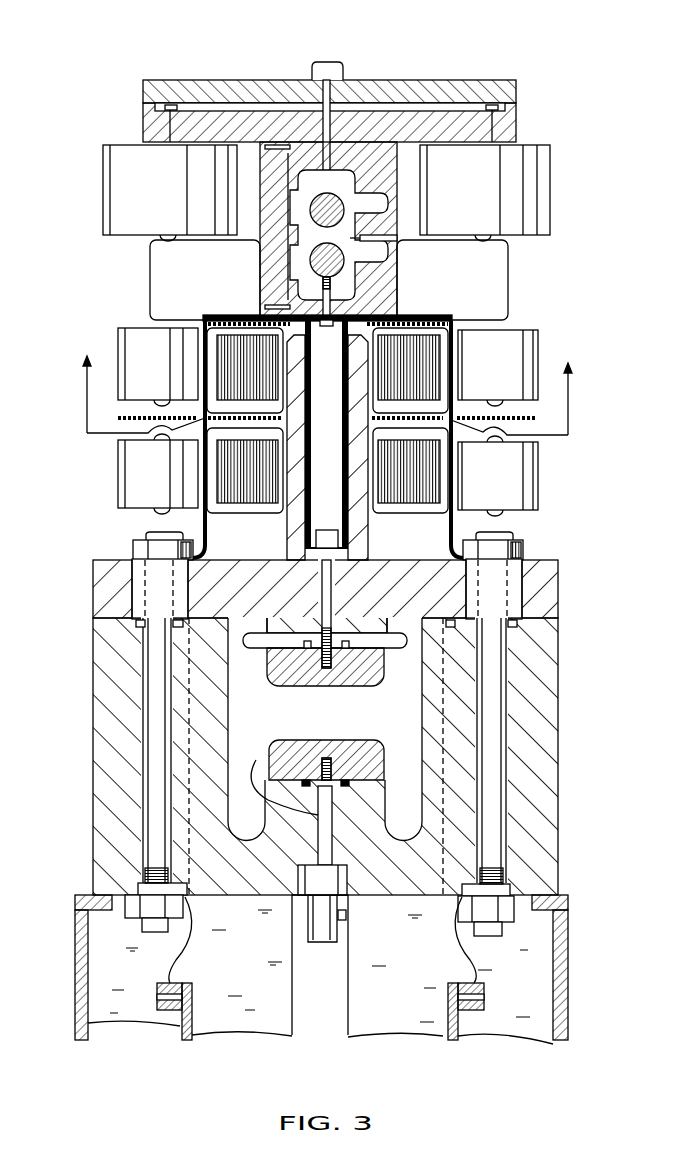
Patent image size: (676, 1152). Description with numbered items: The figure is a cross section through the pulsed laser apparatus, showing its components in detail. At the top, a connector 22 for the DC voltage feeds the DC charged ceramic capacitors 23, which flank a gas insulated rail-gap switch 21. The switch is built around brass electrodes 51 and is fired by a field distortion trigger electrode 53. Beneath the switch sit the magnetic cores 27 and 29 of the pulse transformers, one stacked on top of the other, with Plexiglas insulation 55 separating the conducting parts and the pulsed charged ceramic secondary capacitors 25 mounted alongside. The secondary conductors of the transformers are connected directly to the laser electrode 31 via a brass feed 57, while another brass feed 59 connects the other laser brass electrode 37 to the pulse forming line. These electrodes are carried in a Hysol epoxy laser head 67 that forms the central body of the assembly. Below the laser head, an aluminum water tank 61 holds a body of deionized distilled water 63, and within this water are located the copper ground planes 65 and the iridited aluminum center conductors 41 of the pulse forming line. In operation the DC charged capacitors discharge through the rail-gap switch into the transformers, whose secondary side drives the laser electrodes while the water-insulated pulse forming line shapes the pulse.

The gas insulated rail-gap switch 21 is at (397, 290).
The connector 22 is at (312, 72).
The DC charged ceramic capacitors 23 is at (108, 183).
The pulsed charged ceramic secondary capacitors 25 is at (118, 462).
The magnetic core 27 is at (425, 367).
The magnetic core 29 is at (432, 480).
The laser electrode 31 is at (372, 672).
The laser brass electrode 37 is at (320, 498).
The iridited aluminum center conductors 41 is at (355, 1035).
The brass electrodes 51 is at (312, 215).
The field distortion trigger electrode 53 is at (362, 238).
The Plexiglas insulation 55 is at (150, 418).
The brass feed 57 is at (297, 622).
The brass feed 59 is at (275, 781).
The aluminum water tank 61 is at (77, 895).
The deionized distilled water 63 is at (108, 947).
The copper ground planes 65 is at (78, 1035).
The Hysol epoxy laser head 67 is at (560, 582).